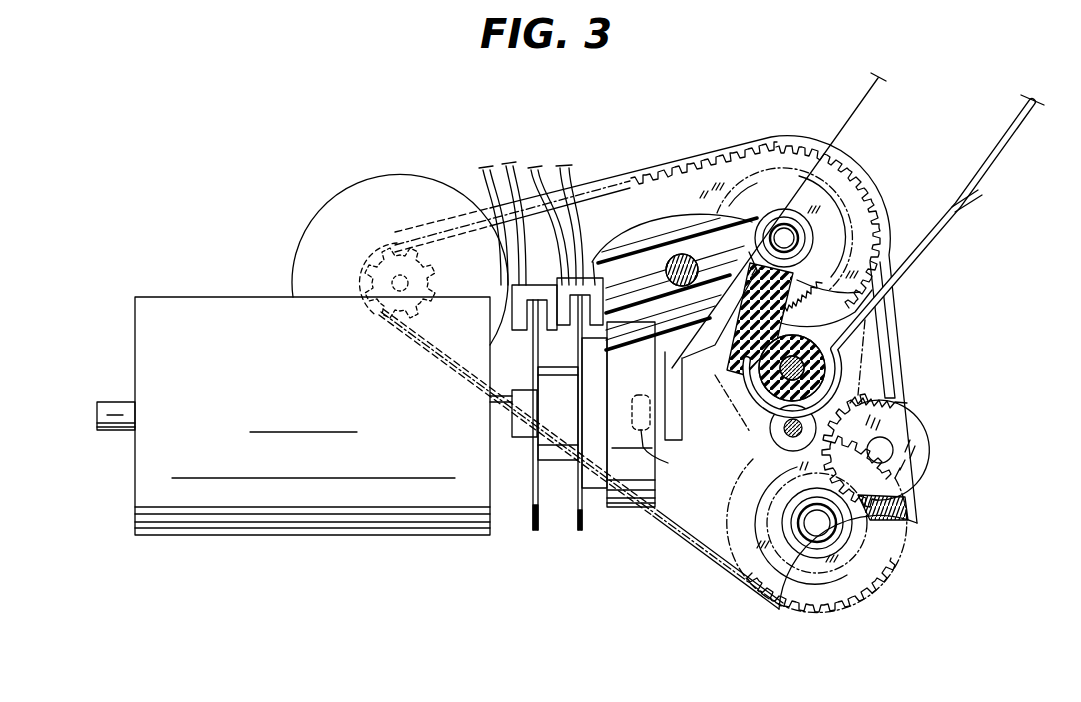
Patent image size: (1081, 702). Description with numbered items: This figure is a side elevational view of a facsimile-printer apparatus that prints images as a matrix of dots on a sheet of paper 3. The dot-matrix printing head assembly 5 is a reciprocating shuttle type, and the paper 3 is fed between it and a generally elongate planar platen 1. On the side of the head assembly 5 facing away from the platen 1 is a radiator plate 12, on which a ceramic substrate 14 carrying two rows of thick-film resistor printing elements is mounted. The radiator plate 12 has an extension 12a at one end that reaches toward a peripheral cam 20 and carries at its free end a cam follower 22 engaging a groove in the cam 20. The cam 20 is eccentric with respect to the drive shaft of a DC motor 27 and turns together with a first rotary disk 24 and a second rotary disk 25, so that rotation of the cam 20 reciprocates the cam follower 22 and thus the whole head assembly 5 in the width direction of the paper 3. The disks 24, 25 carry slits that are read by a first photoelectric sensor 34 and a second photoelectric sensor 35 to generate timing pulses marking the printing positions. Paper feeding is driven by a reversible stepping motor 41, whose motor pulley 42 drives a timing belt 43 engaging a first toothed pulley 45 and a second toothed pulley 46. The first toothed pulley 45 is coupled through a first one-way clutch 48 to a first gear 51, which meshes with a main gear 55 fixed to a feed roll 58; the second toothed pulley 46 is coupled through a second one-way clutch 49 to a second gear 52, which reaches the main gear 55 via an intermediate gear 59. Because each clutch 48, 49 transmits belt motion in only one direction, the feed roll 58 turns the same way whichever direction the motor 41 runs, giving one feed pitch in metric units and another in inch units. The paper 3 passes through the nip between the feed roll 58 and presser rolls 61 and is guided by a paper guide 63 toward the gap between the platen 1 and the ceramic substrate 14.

The platen 1 is at (886, 332).
The sheet of paper 3 is at (1017, 128).
The dot-matrix printing head assembly 5 is at (650, 237).
The radiator plate 12 is at (698, 215).
The extension 12a is at (682, 424).
The ceramic substrate 14 is at (779, 245).
The peripheral cam 20 is at (616, 509).
The cam follower 22 is at (668, 463).
The first rotary disk 24 is at (580, 530).
The second rotary disk 25 is at (534, 530).
The DC motor 27 is at (215, 300).
The first photoelectric sensor 34 is at (583, 278).
The second photoelectric sensor 35 is at (512, 296).
The stepping motor 41 is at (353, 197).
The motor pulley 42 is at (380, 245).
The timing belt 43 is at (670, 172).
The first toothed pulley 45 is at (847, 192).
The second toothed pulley 46 is at (879, 562).
The first one-way clutch 48 is at (777, 225).
The second one-way clutch 49 is at (822, 532).
The first gear 51 is at (780, 228).
The second gear 52 is at (856, 520).
The main gear 55 is at (870, 393).
The feed roll 58 is at (862, 372).
The intermediate gear 59 is at (906, 450).
The presser rolls 61 is at (791, 441).
The paper guide 63 is at (976, 200).